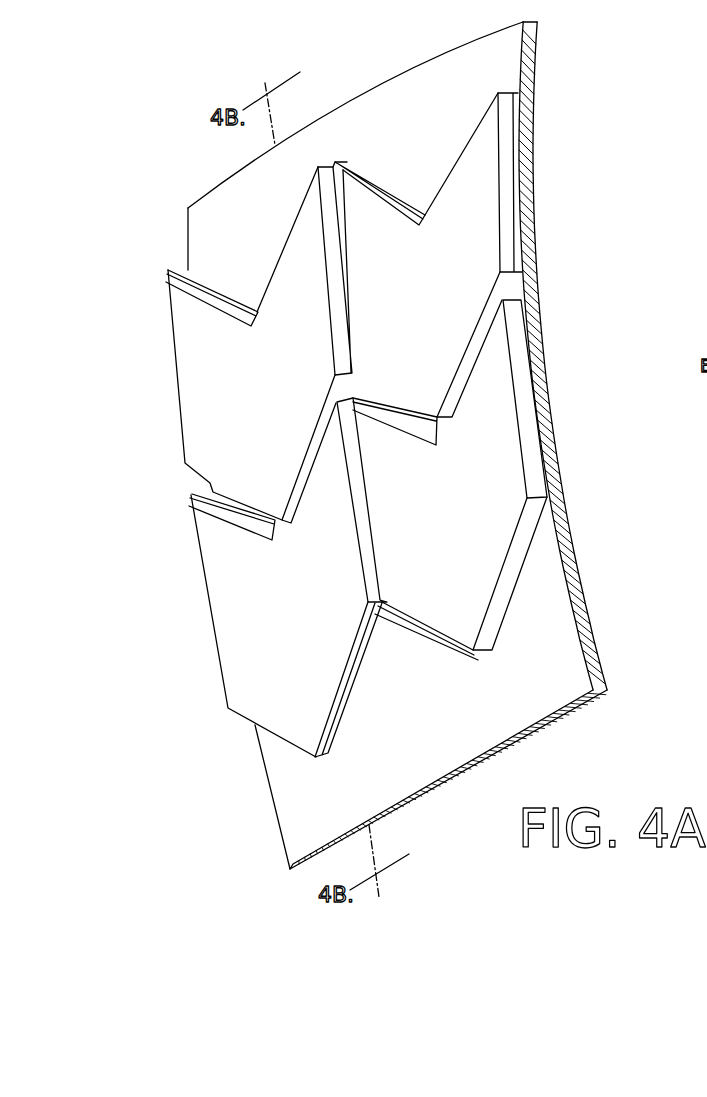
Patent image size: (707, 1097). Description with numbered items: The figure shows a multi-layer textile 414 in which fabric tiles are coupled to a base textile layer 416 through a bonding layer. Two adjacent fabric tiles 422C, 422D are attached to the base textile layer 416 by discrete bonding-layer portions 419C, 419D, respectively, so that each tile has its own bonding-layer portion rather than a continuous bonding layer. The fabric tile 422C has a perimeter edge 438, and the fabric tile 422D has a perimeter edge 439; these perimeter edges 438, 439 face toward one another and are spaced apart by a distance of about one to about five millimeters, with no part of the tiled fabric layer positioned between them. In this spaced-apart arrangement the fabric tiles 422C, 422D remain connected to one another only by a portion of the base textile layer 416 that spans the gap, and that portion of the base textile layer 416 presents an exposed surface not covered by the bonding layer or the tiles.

The multi-layer textile 414 is at (478, 197).
The base textile layer 416 is at (290, 797).
The discrete bonding-layer portion 419C is at (202, 284).
The discrete bonding-layer portion 419D is at (375, 641).
The fabric tile 422C is at (233, 388).
The fabric tile 422D is at (267, 632).
The perimeter edge 438 is at (304, 462).
The perimeter edge 439 is at (283, 528).